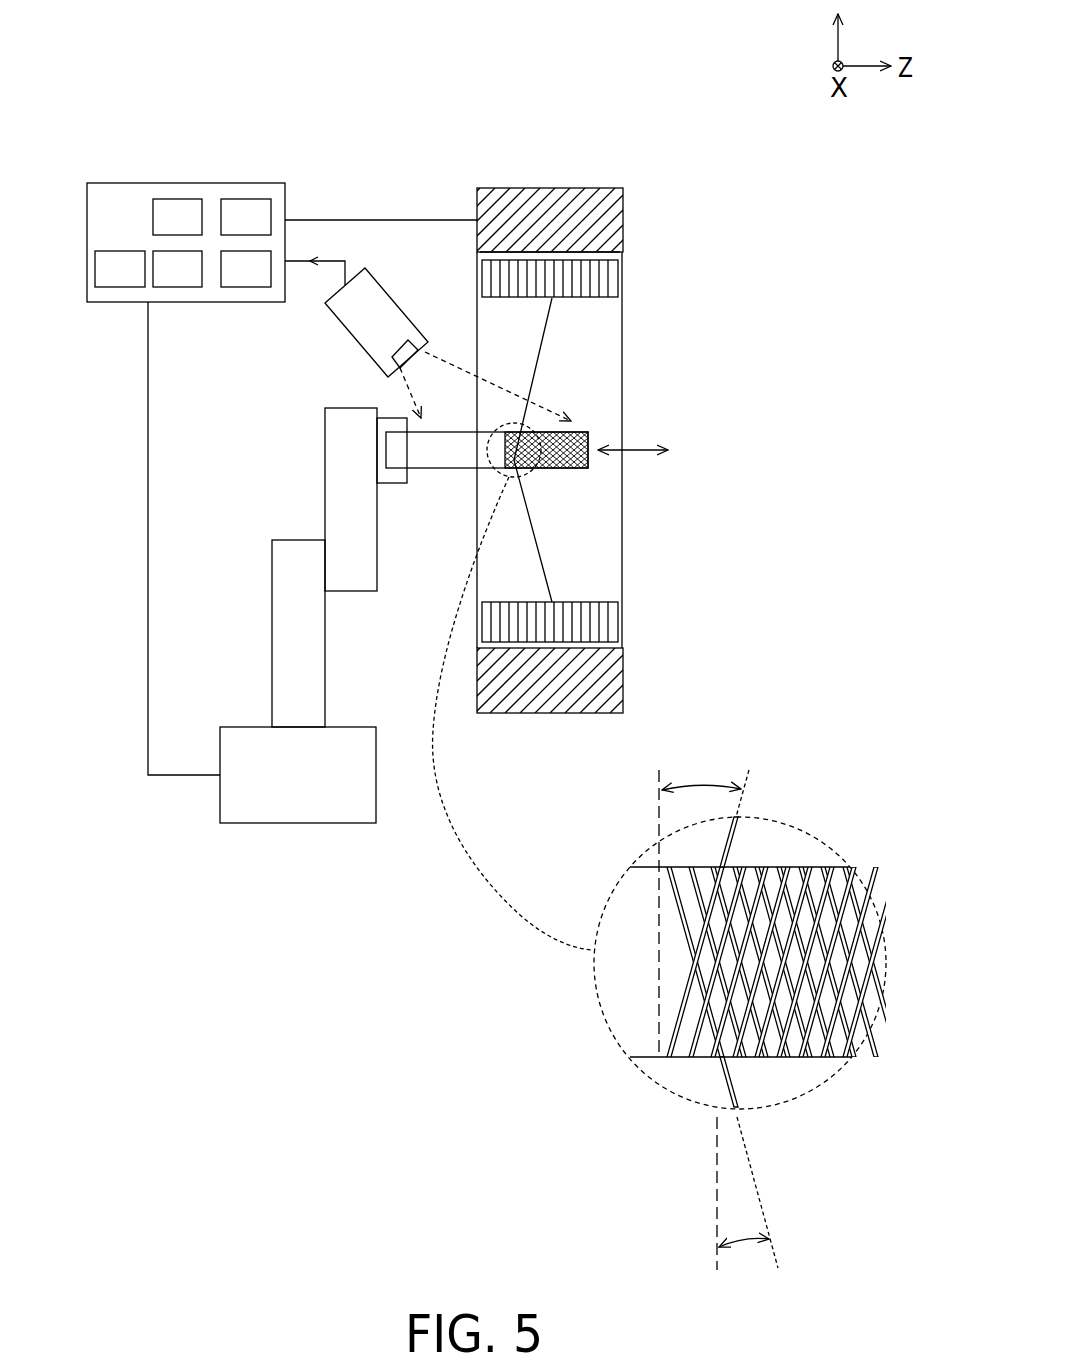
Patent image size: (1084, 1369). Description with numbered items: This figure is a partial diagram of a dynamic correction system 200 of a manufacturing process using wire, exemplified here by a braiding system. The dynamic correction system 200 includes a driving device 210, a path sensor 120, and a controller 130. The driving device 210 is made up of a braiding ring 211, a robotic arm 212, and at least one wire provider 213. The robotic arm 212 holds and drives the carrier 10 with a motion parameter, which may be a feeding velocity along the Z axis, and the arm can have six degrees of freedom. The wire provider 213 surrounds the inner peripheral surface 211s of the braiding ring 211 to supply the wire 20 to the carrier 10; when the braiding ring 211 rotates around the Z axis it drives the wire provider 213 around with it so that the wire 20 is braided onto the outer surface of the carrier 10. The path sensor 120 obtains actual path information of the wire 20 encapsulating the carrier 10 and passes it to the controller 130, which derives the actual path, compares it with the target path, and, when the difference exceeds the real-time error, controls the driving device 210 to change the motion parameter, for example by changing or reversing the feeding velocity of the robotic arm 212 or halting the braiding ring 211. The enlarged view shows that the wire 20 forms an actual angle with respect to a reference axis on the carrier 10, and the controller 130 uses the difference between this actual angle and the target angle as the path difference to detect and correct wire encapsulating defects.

The dynamic correction system 200 is at (396, 55).
The controller 130 is at (140, 232).
The path sensor 120 is at (397, 328).
The carrier 10 is at (441, 470).
The driving device 210 is at (586, 428).
The braiding ring 211 is at (612, 228).
The inner peripheral surface 211s is at (593, 253).
The wire provider 213 is at (618, 288).
The robotic arm 212 is at (272, 591).
The wire 20 is at (727, 849).